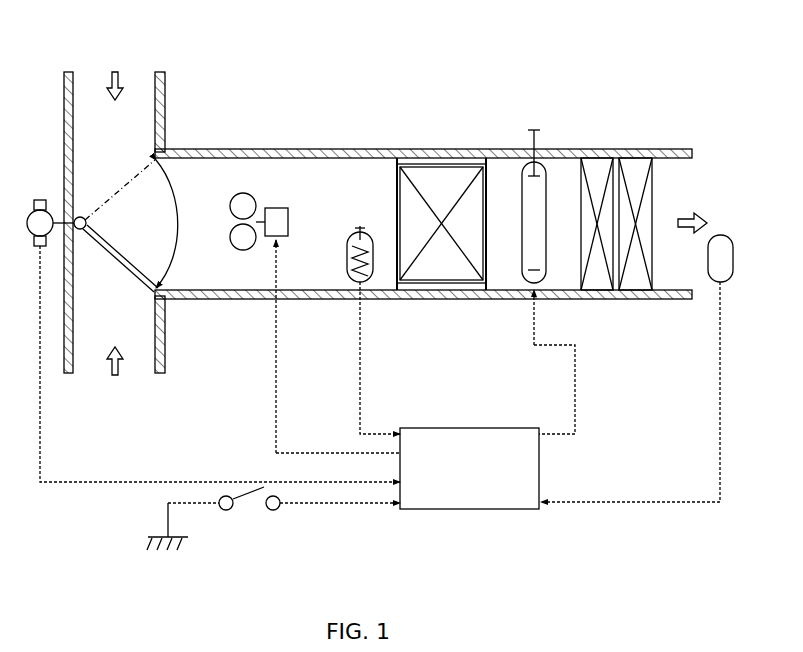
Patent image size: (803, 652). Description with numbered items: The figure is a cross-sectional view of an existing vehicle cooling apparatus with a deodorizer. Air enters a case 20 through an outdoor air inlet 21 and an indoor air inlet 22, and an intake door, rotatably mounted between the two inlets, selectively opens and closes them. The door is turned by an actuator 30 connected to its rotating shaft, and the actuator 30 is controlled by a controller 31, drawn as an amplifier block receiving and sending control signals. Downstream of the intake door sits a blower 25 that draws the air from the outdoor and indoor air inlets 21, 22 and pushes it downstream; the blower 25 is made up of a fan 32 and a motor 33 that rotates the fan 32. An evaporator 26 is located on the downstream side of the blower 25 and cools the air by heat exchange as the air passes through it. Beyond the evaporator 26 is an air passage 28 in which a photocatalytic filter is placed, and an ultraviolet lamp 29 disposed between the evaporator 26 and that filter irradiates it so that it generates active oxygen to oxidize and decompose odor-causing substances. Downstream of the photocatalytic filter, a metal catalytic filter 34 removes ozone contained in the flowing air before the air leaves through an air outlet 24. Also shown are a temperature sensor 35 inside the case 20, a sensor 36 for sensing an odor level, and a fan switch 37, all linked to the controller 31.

The case 20 is at (309, 104).
The outdoor air inlet 21 is at (160, 70).
The indoor air inlet 22 is at (160, 375).
The air outlet 24 is at (678, 190).
The blower 25 is at (272, 172).
The evaporator 26 is at (440, 172).
The air passage 28 is at (506, 172).
The ultraviolet lamp 29 is at (522, 272).
The actuator 30 is at (44, 198).
The controller 31 is at (470, 511).
The fan 32 is at (243, 200).
The motor 33 is at (282, 206).
The metal catalytic filter 34 is at (597, 165).
The temperature sensor 35 is at (348, 285).
The sensor for sensing an odor level 36 is at (735, 255).
The fan switch 37 is at (253, 526).